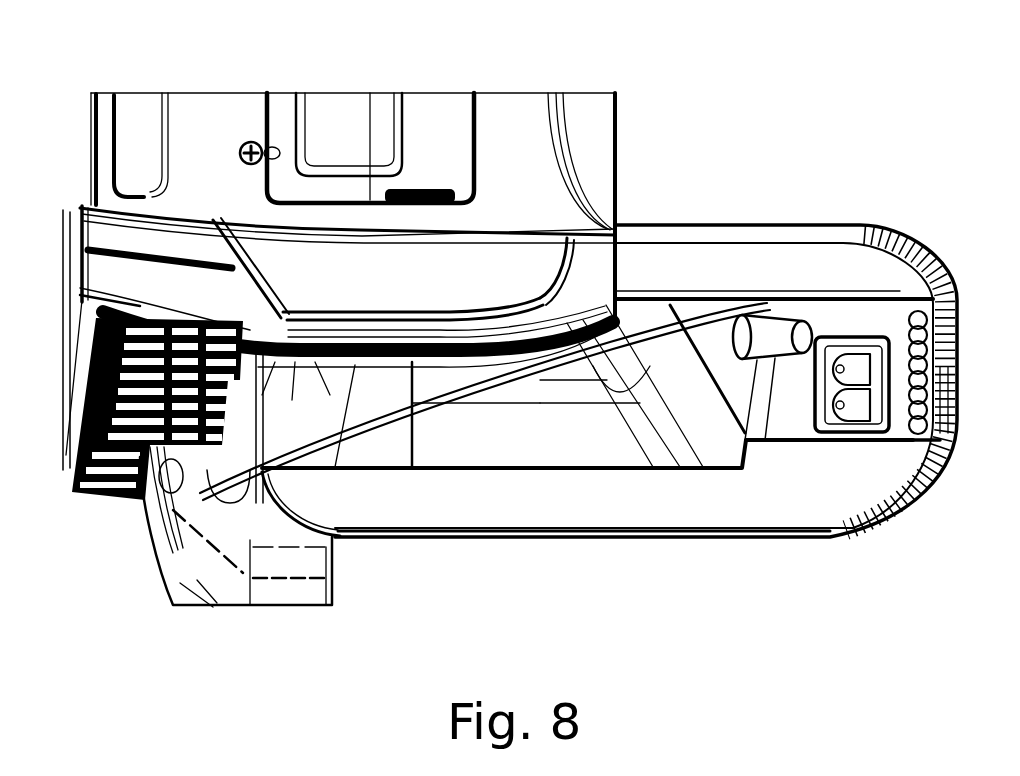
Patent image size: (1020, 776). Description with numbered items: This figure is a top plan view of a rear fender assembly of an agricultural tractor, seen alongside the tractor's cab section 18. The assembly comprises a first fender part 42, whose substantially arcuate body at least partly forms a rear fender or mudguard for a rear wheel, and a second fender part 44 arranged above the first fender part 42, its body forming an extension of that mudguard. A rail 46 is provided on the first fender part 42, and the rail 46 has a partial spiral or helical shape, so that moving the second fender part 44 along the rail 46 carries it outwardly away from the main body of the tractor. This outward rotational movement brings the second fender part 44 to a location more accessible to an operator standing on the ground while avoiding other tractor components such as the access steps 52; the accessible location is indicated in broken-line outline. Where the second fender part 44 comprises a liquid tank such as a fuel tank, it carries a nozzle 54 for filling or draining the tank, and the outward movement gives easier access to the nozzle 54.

The cab section 18 is at (503, 130).
The first fender part 42 is at (768, 498).
The second fender part 44 is at (503, 442).
The rail 46 is at (368, 405).
The access steps 52 is at (113, 473).
The nozzle 54 is at (771, 332).